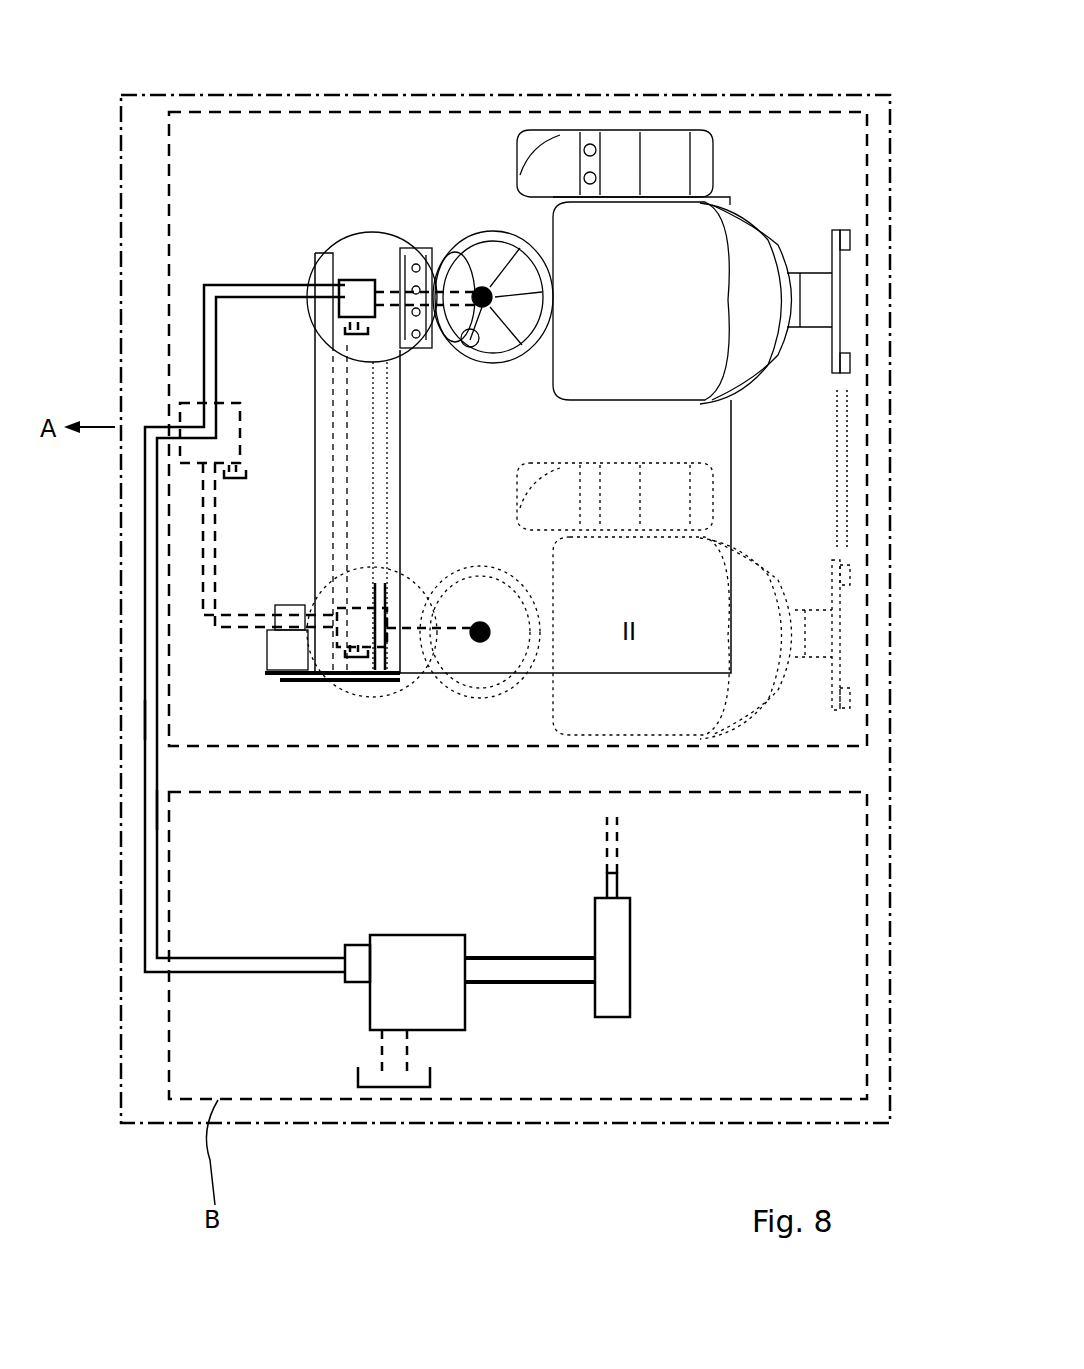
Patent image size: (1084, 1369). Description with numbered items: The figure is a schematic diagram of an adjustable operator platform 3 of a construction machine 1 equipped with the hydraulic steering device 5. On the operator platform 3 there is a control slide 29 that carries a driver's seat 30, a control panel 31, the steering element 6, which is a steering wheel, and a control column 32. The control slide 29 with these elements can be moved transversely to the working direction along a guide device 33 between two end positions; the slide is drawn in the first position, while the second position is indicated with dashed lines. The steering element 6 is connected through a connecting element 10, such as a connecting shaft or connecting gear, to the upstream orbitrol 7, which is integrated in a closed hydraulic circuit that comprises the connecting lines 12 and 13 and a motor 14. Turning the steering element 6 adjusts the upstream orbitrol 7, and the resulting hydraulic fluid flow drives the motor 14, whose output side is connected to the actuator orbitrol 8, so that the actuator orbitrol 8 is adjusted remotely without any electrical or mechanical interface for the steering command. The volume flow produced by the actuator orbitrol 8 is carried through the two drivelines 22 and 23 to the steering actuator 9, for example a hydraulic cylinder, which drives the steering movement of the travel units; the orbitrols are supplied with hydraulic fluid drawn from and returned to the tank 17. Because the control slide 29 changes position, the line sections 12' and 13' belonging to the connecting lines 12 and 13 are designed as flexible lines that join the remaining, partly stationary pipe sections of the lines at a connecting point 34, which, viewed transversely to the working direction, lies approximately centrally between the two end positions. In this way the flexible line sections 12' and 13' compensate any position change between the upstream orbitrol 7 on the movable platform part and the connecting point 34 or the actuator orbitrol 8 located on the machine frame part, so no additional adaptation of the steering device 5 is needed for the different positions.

The construction machine 1 is at (157, 1125).
The operator platform 3 is at (290, 112).
The steering device 5 is at (218, 920).
The steering element 6 is at (465, 243).
The upstream orbitrol 7 is at (357, 280).
The actuator orbitrol 8 is at (455, 1020).
The steering actuator 9 is at (622, 1015).
The steering column 10 is at (398, 240).
The connecting line 12 is at (102, 805).
The line section 12' is at (206, 571).
The connecting line 13 is at (92, 709).
The line section 13' is at (206, 593).
The motor 14 is at (363, 975).
The tank 17 is at (390, 1082).
The driveline 22 is at (515, 985).
The driveline 23 is at (550, 960).
The control slide 29 is at (808, 296).
The driver's seat 30 is at (700, 283).
The control panel 31 is at (653, 143).
The control column 32 is at (370, 243).
The guide device 33 is at (358, 428).
The connecting point 34 is at (190, 412).